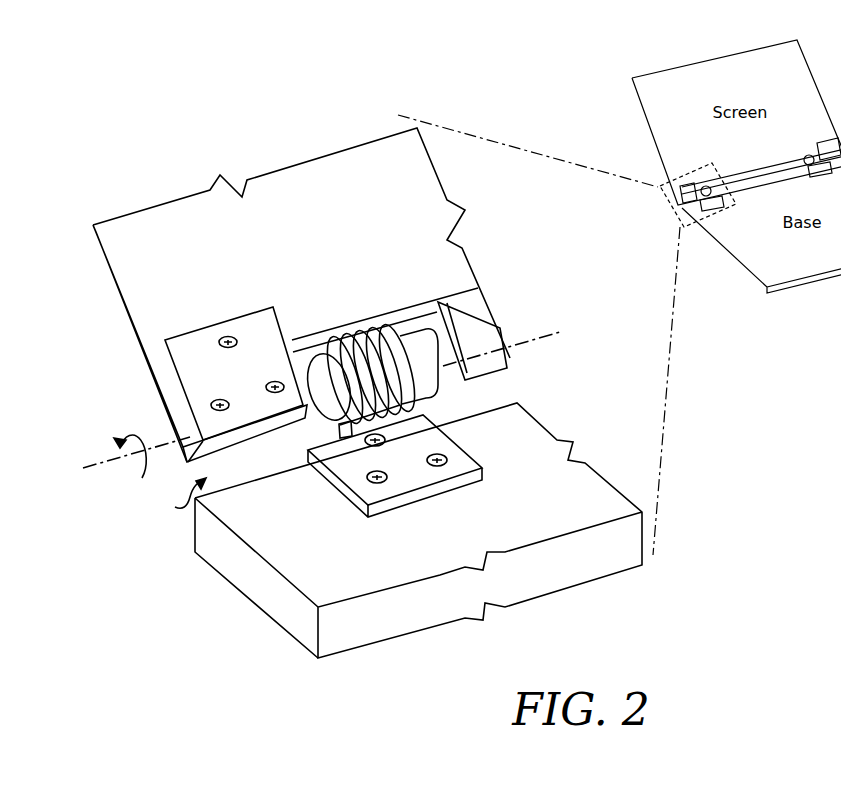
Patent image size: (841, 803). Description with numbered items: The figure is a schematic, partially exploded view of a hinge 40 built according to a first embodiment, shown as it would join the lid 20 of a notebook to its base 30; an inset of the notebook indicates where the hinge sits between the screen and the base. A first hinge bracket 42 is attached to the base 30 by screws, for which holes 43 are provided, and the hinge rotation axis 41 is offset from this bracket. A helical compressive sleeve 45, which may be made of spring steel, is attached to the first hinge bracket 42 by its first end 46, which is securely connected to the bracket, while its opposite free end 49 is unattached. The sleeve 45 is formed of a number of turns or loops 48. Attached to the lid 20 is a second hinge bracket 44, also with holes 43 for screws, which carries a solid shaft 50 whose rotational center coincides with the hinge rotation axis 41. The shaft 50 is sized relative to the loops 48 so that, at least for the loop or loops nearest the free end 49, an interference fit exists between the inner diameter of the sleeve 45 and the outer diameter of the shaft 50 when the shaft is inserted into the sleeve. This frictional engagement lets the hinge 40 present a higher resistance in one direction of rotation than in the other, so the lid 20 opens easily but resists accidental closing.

The lid 20 is at (330, 249).
The base 30 is at (520, 519).
The hinge 40 is at (177, 502).
The hinge rotation axis 41 is at (100, 467).
The first hinge bracket 42 is at (355, 458).
The holes 43 is at (228, 336).
The second hinge bracket 44 is at (262, 318).
The helical compressive sleeve 45 is at (367, 343).
The first end 46 is at (340, 435).
The loops 48 is at (347, 333).
The free end 49 is at (407, 355).
The solid shaft 50 is at (327, 370).